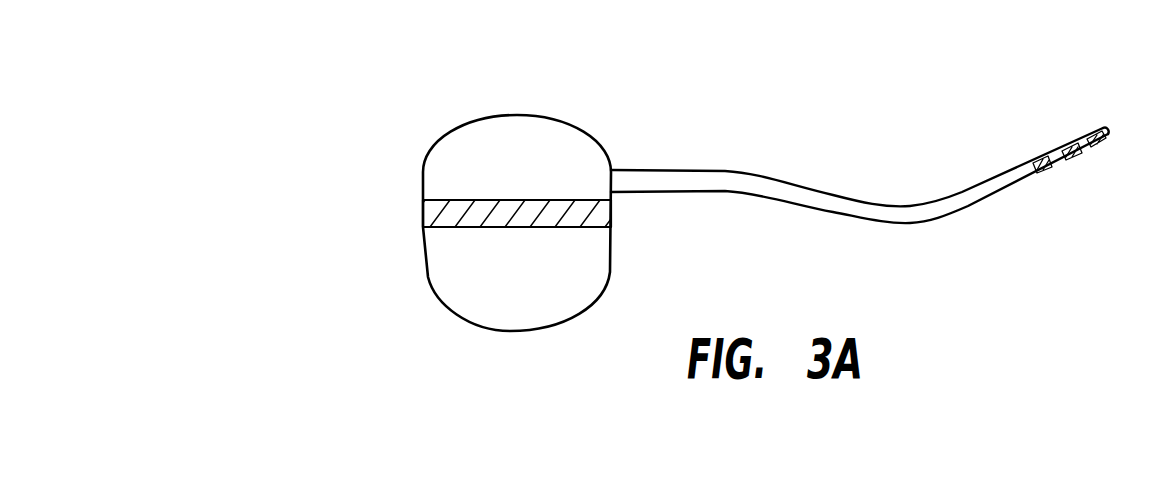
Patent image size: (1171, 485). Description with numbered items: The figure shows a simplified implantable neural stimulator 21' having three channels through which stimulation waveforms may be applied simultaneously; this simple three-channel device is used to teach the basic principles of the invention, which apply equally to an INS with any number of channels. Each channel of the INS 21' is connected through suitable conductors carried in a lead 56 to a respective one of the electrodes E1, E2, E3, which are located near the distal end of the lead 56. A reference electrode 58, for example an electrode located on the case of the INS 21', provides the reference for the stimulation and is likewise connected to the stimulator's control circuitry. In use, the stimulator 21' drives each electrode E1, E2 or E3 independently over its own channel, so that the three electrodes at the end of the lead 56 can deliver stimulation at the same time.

The implantable neural stimulator 21' is at (517, 174).
The reference electrode 58 is at (603, 213).
The lead 56 is at (733, 171).
The electrode E1 is at (1110, 148).
The electrode E2 is at (1080, 164).
The electrode E3 is at (1047, 180).